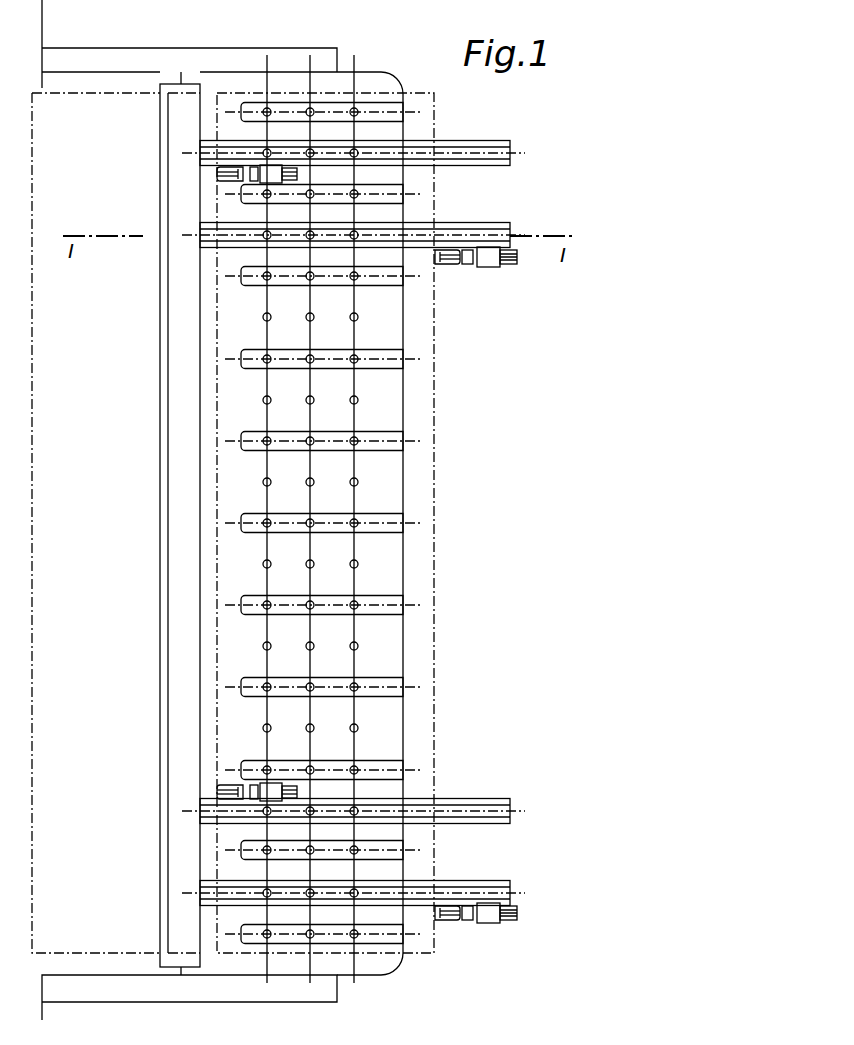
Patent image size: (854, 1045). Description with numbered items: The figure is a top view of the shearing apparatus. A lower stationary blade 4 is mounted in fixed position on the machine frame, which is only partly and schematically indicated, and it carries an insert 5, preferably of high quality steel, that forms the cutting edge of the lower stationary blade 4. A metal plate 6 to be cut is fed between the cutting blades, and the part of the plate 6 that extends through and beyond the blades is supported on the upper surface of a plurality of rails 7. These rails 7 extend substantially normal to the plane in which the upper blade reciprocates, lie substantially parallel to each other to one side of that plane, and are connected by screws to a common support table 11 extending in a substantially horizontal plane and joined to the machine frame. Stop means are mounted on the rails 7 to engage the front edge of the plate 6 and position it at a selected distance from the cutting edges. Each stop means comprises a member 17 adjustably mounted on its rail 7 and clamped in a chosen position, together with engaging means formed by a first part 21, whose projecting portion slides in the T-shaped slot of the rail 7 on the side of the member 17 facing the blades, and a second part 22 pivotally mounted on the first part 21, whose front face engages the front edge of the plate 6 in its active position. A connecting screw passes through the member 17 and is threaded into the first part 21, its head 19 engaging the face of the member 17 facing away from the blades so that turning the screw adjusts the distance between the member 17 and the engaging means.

The lower stationary blade 4 is at (181, 500).
The insert 5 is at (164, 427).
The metal plate 6 is at (423, 487).
The rails 7 is at (490, 803).
The common support table 11 is at (391, 657).
The member 17 is at (491, 925).
The head 19 is at (506, 911).
The first part 21 is at (470, 923).
The second part 22 is at (448, 921).